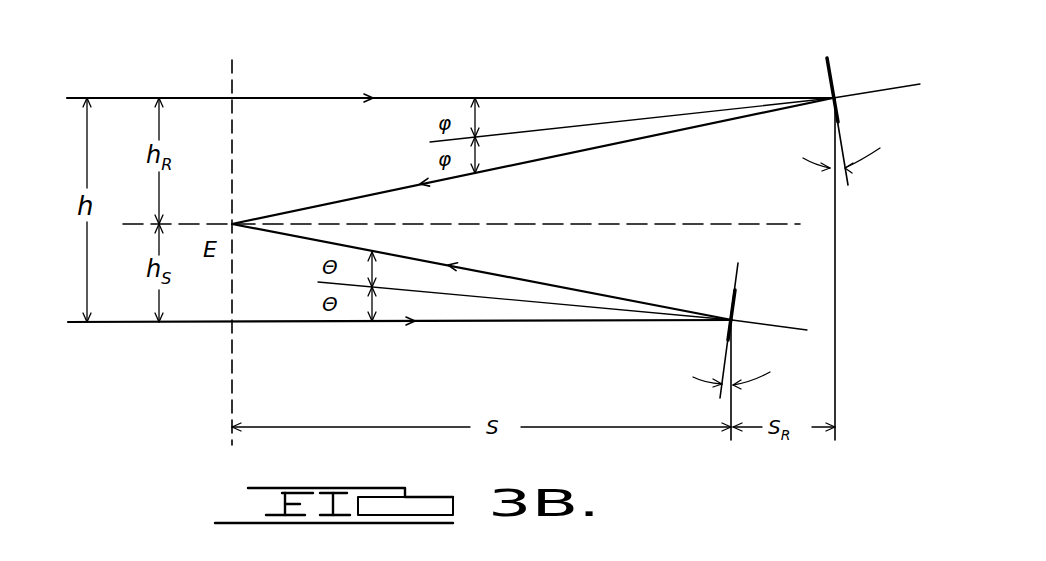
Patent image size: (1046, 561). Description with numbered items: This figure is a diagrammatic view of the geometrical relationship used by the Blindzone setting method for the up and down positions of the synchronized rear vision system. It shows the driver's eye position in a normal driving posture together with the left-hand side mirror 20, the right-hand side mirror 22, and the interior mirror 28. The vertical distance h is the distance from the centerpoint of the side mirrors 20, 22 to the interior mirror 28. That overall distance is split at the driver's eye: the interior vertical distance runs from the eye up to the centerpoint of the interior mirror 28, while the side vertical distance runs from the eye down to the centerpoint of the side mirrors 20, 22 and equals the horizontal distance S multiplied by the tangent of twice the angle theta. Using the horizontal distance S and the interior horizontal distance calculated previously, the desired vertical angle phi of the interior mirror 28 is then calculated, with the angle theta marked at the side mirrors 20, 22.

The interior mirror 28 is at (836, 82).
The left-hand side mirror 20 is at (808, 330).
The right-hand side mirror 22 is at (735, 308).